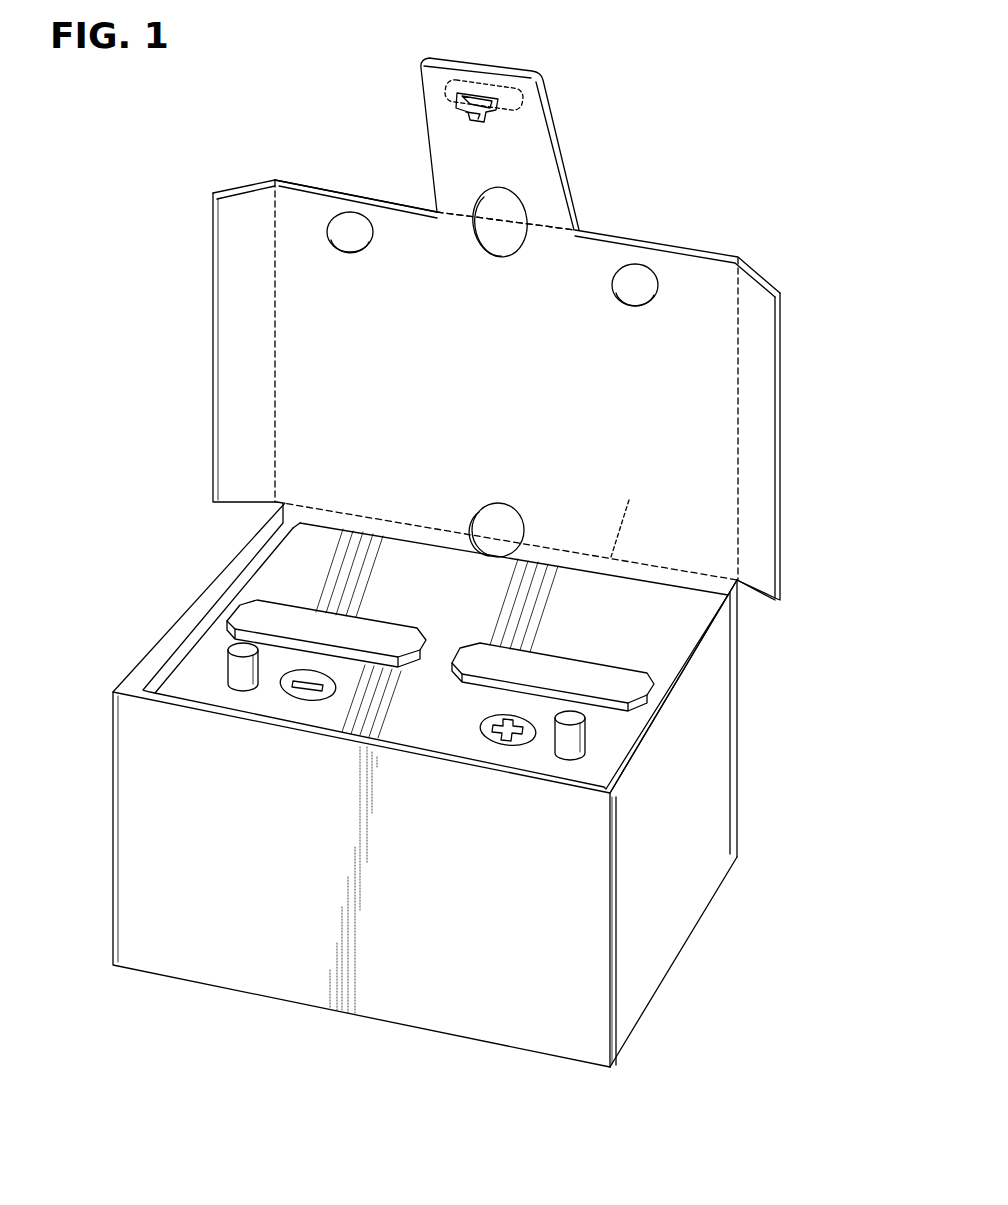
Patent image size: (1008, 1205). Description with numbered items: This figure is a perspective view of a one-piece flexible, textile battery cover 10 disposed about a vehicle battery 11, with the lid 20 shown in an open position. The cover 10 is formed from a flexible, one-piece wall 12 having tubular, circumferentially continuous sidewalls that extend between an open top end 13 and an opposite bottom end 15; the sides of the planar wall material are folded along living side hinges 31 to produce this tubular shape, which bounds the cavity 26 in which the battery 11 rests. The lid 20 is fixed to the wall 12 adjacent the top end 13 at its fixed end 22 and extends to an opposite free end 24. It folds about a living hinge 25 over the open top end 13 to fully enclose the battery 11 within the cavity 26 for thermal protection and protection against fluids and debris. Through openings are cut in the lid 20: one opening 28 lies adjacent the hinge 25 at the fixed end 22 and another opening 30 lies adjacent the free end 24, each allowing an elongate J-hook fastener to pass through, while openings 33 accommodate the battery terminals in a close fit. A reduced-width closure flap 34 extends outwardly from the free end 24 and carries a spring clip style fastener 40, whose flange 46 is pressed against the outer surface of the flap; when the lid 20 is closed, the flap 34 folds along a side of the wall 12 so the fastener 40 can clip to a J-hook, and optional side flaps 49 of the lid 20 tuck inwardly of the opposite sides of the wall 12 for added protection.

The cover 10 is at (800, 268).
The vehicle battery 11 is at (652, 650).
The wall 12 is at (446, 789).
The top end 13 is at (648, 741).
The bottom end 15 is at (633, 1043).
The lid 20 is at (494, 318).
The fixed end 22 is at (683, 586).
The free end 24 is at (363, 188).
The living hinge 25 is at (627, 517).
The cavity 26 is at (383, 519).
The opening 28 is at (478, 532).
The opening 30 is at (478, 235).
The living side hinges 31 is at (739, 783).
The openings 33 is at (351, 242).
The closure flap 34 is at (512, 133).
The fastener 40 is at (490, 123).
The flange 46 is at (170, 645).
The side flaps 49 is at (212, 310).